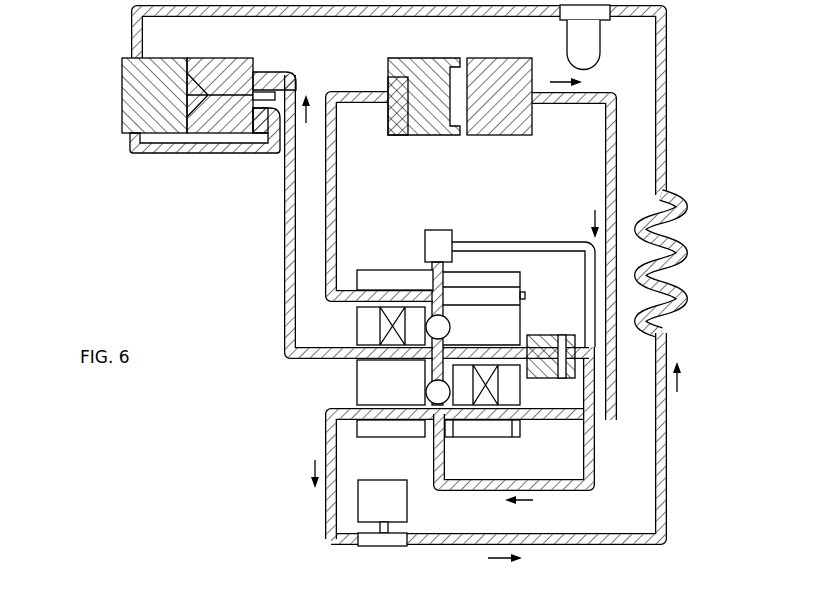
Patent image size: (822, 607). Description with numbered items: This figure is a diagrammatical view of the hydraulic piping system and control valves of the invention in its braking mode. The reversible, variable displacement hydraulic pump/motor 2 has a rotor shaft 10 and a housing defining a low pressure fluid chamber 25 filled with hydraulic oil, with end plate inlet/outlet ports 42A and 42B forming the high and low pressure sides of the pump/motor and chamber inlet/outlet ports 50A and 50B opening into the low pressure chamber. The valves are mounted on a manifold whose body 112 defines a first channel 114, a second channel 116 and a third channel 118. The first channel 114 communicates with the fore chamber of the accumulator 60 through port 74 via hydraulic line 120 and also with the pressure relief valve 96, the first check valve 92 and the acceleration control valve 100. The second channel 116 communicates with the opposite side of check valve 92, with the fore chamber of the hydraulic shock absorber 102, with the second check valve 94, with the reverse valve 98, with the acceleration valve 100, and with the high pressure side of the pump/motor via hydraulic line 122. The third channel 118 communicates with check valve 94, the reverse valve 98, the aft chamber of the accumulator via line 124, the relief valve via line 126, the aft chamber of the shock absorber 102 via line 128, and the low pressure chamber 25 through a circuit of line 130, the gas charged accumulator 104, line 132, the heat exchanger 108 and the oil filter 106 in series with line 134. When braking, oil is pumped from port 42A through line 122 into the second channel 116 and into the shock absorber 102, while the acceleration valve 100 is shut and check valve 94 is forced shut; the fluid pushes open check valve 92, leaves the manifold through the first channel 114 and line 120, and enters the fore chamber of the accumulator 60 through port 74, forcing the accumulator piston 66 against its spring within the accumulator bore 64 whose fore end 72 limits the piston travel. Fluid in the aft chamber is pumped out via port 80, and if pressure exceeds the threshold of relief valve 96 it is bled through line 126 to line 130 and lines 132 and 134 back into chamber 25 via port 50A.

The reversible, variable displacement hydraulic pump/motor 2 is at (203, 58).
The p/m rotor shaft 10 is at (273, 98).
The low pressure fluid chamber 25 is at (122, 100).
The inlet/outlet port (high pressure side) 42A is at (256, 70).
The inlet/outlet port (low pressure side) 42B is at (258, 130).
The chamber inlet/outlet port 50A is at (147, 58).
The chamber inlet/outlet port 50B is at (127, 140).
The accumulator 60 is at (490, 136).
The accumulator bore 64 is at (419, 70).
The accumulator piston 66 is at (467, 58).
The fore end of accumulator bore 72 is at (393, 112).
The port 74 is at (400, 110).
The hydraulic port 80 is at (533, 105).
The first check valve (accumulator check valve) 92 is at (441, 328).
The second check valve (low pressure check valve) 94 is at (432, 392).
The pressure relief valve 96 is at (437, 228).
The reverse valve 98 is at (481, 392).
The acceleration control valve 100 is at (382, 315).
The hydraulic shock absorber 102 is at (537, 333).
The gas charged accumulator 104 is at (400, 501).
The oil filter 106 is at (591, 60).
The air-cooled heat exchanger 108 is at (686, 258).
The manifold body 112 is at (512, 279).
The first channel 114 is at (358, 282).
The second channel 116 is at (367, 365).
The third channel 118 is at (513, 425).
The hydraulic line 120 is at (338, 150).
The hydraulic line 122 is at (283, 307).
The hydraulic line 124 is at (601, 199).
The hydraulic line (low pressure line) 126 is at (595, 475).
The hydraulic line 128 is at (582, 375).
The hydraulic line 130 is at (325, 458).
The hydraulic line 132 is at (547, 533).
The hydraulic line 134 is at (338, 17).